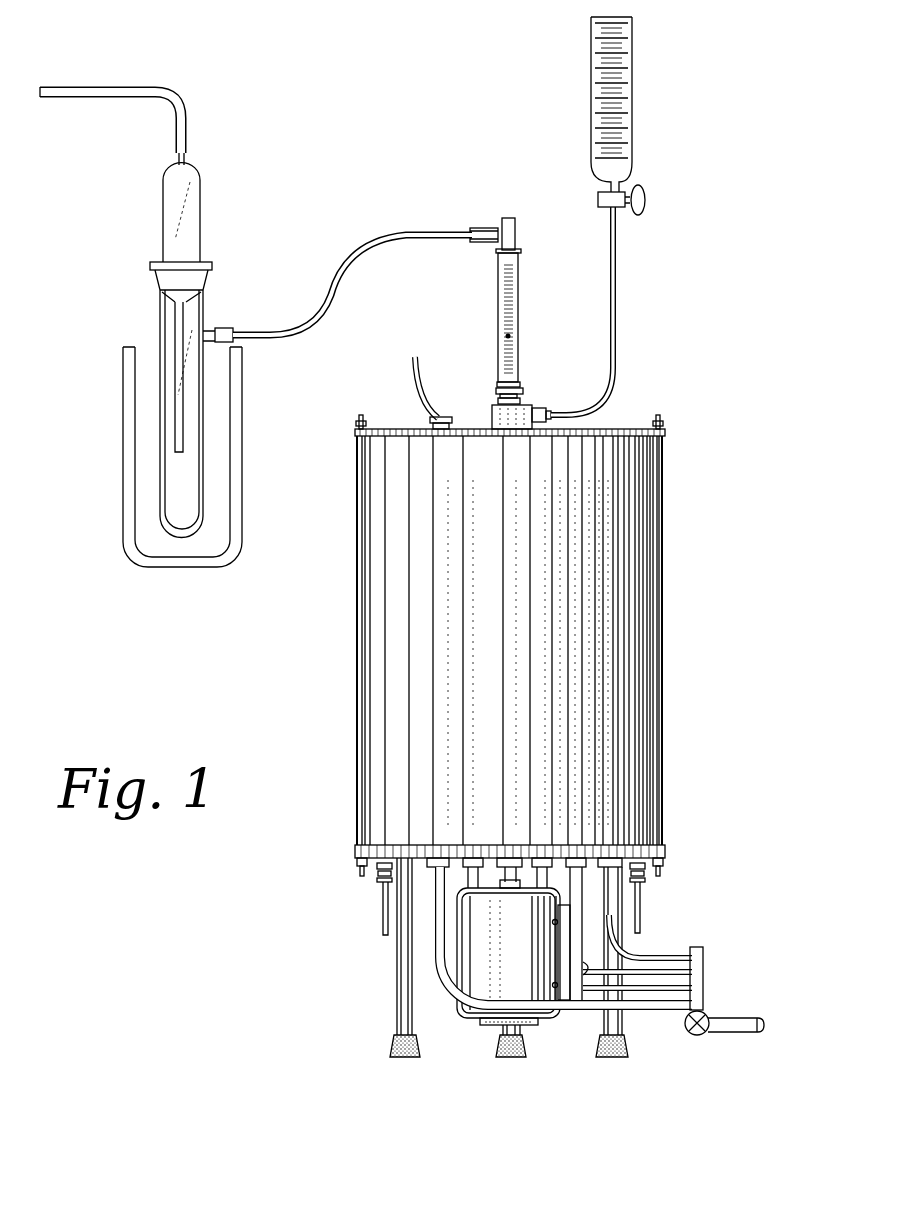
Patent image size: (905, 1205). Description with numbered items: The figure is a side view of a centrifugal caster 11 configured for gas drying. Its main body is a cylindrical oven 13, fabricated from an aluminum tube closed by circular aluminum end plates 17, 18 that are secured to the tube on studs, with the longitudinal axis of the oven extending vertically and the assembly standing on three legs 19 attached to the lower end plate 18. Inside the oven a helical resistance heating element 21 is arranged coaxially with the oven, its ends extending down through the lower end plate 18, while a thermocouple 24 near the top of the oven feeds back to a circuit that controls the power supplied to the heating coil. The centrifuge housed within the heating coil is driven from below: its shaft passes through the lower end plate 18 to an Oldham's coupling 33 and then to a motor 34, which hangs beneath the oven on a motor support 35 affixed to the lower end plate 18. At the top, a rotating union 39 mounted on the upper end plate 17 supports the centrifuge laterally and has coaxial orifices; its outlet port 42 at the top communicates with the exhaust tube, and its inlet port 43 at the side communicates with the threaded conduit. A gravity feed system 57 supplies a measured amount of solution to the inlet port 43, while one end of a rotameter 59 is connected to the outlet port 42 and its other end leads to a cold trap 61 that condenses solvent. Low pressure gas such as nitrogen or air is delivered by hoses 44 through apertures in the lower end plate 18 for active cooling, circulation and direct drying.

The centrifugal caster 11 is at (690, 659).
The cylindrical oven 13 is at (357, 692).
The upper end plate 17 is at (668, 432).
The lower end plate 18 is at (355, 851).
The legs 19 is at (396, 1008).
The helical resistance heating element 21 is at (381, 908).
The thermocouple 24 is at (437, 397).
The Oldham's coupling 33 is at (506, 878).
The motor 34 is at (468, 958).
The motor support 35 is at (574, 932).
The rotating union 39 is at (492, 406).
The outlet port 42 is at (521, 386).
The inlet port 43 is at (547, 411).
The hoses 44 is at (657, 1006).
The gravity feed system 57 is at (632, 88).
The rotameter 59 is at (519, 290).
The cold trap 61 is at (146, 331).